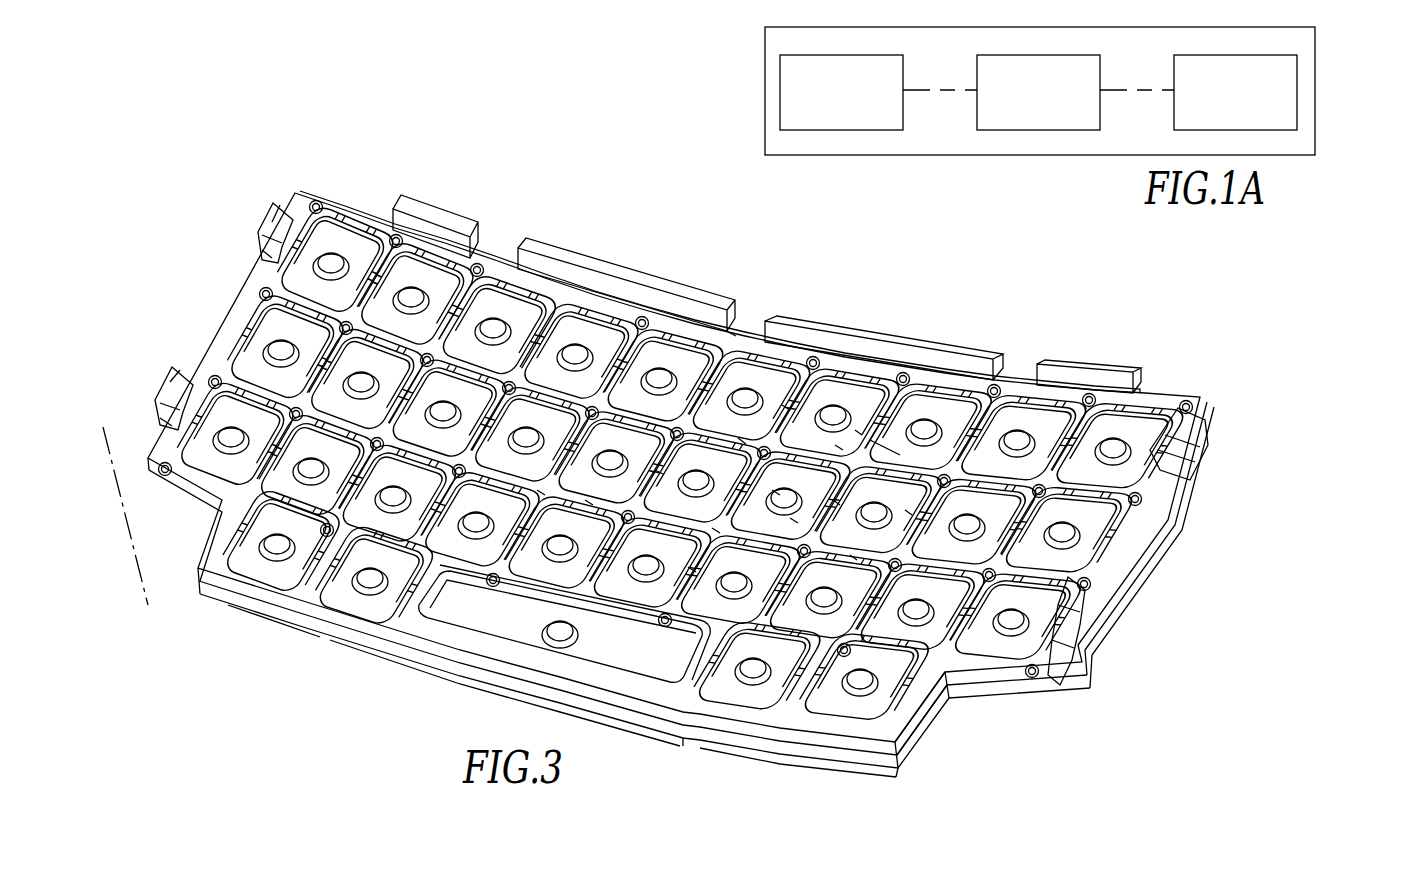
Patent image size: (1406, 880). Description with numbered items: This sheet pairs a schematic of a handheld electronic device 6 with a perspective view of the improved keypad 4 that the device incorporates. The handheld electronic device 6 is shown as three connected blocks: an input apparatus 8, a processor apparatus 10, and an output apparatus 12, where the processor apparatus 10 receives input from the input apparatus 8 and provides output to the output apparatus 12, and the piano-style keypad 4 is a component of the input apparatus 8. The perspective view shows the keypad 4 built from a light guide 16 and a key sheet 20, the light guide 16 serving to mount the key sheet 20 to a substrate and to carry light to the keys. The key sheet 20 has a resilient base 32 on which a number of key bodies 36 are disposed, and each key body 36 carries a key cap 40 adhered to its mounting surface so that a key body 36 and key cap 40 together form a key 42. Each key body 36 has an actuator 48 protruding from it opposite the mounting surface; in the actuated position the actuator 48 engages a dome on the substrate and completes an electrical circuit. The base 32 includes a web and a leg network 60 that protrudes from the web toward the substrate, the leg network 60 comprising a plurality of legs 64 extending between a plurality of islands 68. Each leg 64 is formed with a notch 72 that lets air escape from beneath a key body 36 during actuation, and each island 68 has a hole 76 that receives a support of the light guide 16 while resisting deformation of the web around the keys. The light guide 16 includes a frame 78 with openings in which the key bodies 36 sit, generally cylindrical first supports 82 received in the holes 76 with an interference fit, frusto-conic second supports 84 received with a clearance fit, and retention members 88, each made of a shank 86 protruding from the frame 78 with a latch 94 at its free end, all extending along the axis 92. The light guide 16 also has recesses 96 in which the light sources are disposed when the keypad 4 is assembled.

In FIG. 3, the keypad 4 is at (1033, 300).
In FIG. 1A, the handheld electronic device 6 is at (752, 104).
In FIG. 1A, the input apparatus 8 is at (840, 128).
In FIG. 1A, the processor apparatus 10 is at (1028, 128).
In FIG. 1A, the output apparatus 12 is at (1298, 90).
In FIG. 3, the light guide 16 is at (1153, 518).
In FIG. 3, the key sheet 20 is at (980, 680).
In FIG. 3, the base 32 is at (1146, 388).
In FIG. 3, the key body 36 is at (333, 235).
In FIG. 3, the key cap 40 is at (742, 745).
In FIG. 3, the key 42 is at (352, 662).
In FIG. 3, the actuator 48 is at (345, 258).
In FIG. 3, the leg network 60 is at (880, 442).
In FIG. 3, the leg 64 is at (855, 430).
In FIG. 3, the island 68 is at (772, 490).
In FIG. 3, the notch 72 is at (782, 405).
In FIG. 3, the hole 76 is at (730, 328).
In FIG. 3, the frame 78 is at (1140, 548).
In FIG. 3, the first support 82 is at (712, 528).
In FIG. 3, the second support 84 is at (655, 470).
In FIG. 3, the shank 86 is at (258, 256).
In FIG. 3, the retention member 88 is at (270, 195).
In FIG. 3, the axis 92 is at (118, 540).
In FIG. 3, the latch 94 is at (300, 200).
In FIG. 3, the recess 96 is at (492, 238).